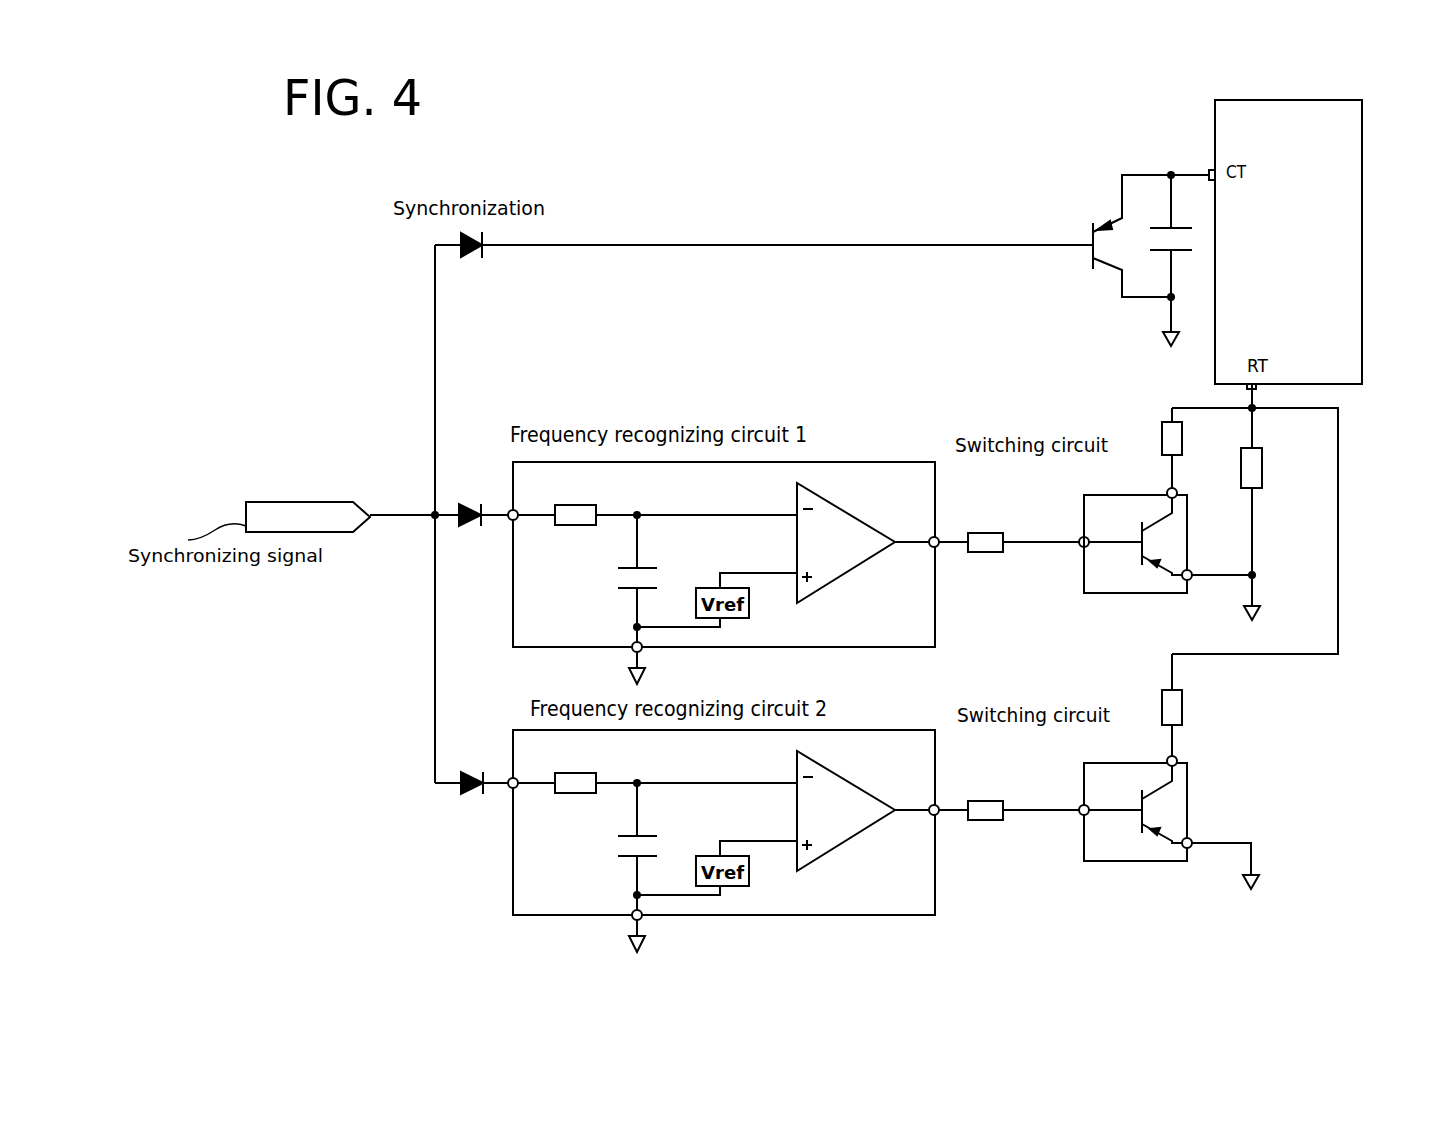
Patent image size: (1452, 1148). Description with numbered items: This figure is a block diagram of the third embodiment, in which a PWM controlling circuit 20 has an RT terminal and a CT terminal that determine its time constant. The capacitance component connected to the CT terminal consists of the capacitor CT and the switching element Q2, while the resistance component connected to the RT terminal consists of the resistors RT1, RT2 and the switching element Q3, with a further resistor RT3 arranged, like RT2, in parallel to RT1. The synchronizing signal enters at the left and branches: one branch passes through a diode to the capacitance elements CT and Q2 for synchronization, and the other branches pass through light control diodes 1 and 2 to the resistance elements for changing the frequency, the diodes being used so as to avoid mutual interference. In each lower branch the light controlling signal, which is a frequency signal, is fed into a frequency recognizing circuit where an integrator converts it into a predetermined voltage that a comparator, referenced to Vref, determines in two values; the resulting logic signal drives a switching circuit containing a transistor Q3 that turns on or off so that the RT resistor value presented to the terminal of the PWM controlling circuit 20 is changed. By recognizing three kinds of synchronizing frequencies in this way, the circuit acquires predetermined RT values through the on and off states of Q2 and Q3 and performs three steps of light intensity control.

The PWM controlling circuit 20 is at (1362, 305).
The light control diode 1 is at (476, 481).
The light control diode 2 is at (476, 746).
The switching element Q2 is at (1111, 236).
The switching element Q3 is at (1138, 691).
The resistor RT1 is at (1269, 492).
The resistor RT2 is at (1157, 428).
The resistor RT3 is at (1157, 698).
The capacitor CT is at (1181, 259).